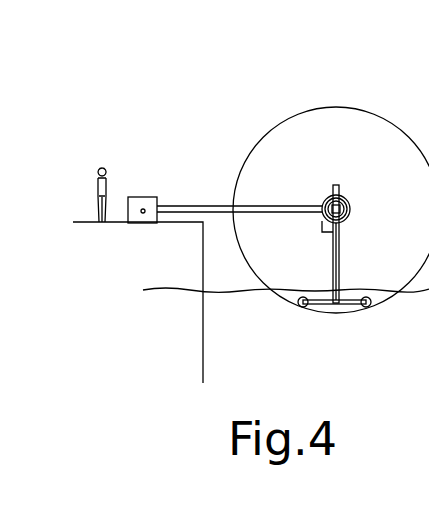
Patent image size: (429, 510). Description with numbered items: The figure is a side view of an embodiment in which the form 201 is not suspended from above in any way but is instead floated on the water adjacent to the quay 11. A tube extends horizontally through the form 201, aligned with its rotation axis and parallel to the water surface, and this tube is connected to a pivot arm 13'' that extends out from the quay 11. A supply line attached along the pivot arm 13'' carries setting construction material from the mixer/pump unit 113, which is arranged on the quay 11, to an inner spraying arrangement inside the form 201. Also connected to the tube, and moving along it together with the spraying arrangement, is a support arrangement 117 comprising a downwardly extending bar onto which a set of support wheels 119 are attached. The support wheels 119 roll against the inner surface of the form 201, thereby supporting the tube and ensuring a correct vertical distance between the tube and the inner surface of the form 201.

The quay 11 is at (185, 268).
The mixer/pump unit 113 is at (142, 197).
The pivot arm 13'' is at (239, 135).
The form 201 is at (338, 107).
The support arrangement 117 is at (338, 248).
The support wheels 119 is at (301, 307).